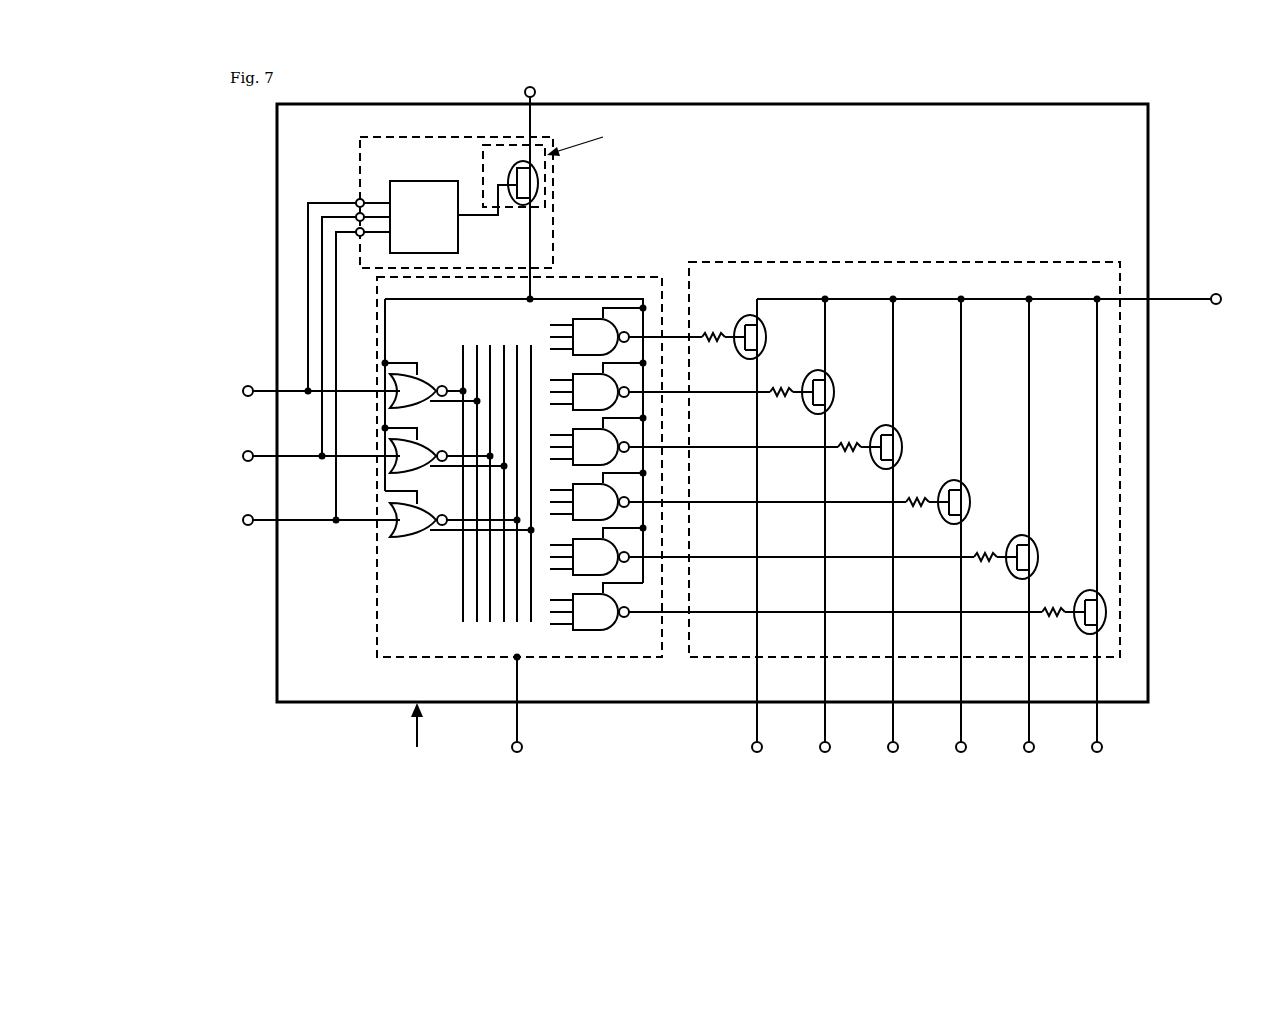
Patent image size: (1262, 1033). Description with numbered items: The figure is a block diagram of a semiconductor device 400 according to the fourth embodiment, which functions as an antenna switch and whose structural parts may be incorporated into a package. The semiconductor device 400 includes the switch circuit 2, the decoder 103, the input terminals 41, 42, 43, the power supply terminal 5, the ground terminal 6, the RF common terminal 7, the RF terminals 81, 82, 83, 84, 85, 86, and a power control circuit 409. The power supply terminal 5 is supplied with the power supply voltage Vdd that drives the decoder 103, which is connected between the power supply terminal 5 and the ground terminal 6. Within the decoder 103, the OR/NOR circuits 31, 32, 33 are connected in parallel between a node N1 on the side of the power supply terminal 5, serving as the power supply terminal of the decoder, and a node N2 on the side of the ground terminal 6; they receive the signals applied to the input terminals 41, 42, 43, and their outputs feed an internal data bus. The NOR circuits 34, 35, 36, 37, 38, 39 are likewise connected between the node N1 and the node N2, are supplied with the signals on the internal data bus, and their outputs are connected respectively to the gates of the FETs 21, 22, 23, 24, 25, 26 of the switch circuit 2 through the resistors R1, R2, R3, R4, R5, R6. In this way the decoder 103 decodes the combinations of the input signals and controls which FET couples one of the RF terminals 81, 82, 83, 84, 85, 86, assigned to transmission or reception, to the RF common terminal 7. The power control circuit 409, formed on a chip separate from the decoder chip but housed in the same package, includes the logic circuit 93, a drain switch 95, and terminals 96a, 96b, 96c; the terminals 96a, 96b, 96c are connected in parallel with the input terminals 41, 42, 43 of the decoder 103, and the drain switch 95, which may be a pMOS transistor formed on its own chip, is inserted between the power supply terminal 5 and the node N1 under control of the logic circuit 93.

The semiconductor device 400 is at (735, 57).
The power control circuit 409 is at (553, 232).
The logic circuit 93 is at (431, 183).
The drain switch 95 is at (552, 180).
The terminal 96a is at (361, 199).
The terminal 96b is at (356, 212).
The terminal 96c is at (352, 226).
The power supply terminal 5 is at (535, 88).
The ground terminal 6 is at (521, 751).
The RF common terminal 7 is at (1219, 294).
The switch circuit 2 is at (908, 262).
The decoder 103 is at (545, 660).
The node N1 is at (540, 295).
The node N2 is at (515, 660).
The OR/NOR circuit 31 is at (426, 373).
The OR/NOR circuit 32 is at (426, 438).
The OR/NOR circuit 33 is at (426, 502).
The NOR circuit 34 is at (590, 358).
The NOR circuit 35 is at (590, 413).
The NOR circuit 36 is at (590, 468).
The NOR circuit 37 is at (590, 523).
The NOR circuit 38 is at (590, 578).
The NOR circuit 39 is at (590, 633).
The input terminal 41 is at (242, 386).
The input terminal 42 is at (242, 451).
The input terminal 43 is at (242, 515).
The FET 21 is at (748, 314).
The FET 22 is at (816, 369).
The FET 23 is at (884, 424).
The FET 24 is at (952, 479).
The FET 25 is at (1020, 534).
The FET 26 is at (1088, 589).
The resistor R1 is at (707, 330).
The resistor R2 is at (783, 385).
The resistor R3 is at (851, 440).
The resistor R4 is at (919, 495).
The resistor R5 is at (987, 550).
The resistor R6 is at (1055, 605).
The RF terminal 81 is at (752, 751).
The RF terminal 82 is at (823, 752).
The RF terminal 83 is at (890, 751).
The RF terminal 84 is at (959, 752).
The RF terminal 85 is at (1027, 752).
The RF terminal 86 is at (1099, 752).